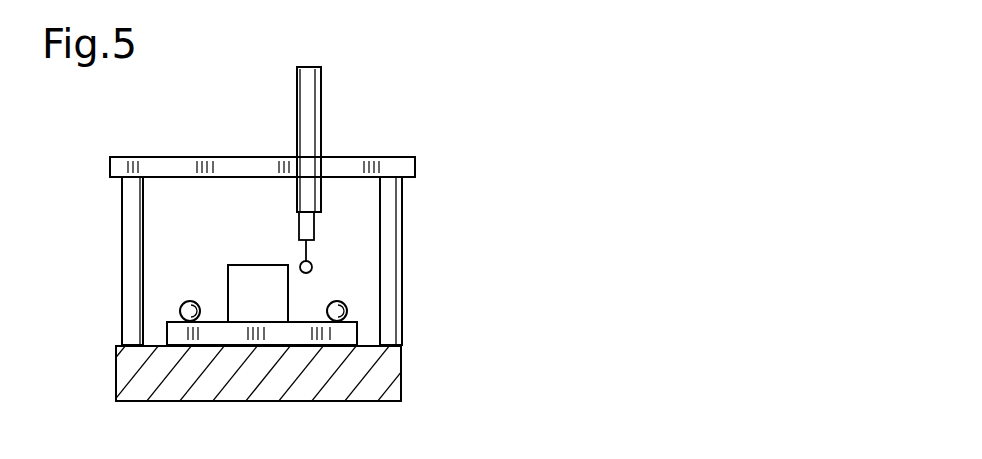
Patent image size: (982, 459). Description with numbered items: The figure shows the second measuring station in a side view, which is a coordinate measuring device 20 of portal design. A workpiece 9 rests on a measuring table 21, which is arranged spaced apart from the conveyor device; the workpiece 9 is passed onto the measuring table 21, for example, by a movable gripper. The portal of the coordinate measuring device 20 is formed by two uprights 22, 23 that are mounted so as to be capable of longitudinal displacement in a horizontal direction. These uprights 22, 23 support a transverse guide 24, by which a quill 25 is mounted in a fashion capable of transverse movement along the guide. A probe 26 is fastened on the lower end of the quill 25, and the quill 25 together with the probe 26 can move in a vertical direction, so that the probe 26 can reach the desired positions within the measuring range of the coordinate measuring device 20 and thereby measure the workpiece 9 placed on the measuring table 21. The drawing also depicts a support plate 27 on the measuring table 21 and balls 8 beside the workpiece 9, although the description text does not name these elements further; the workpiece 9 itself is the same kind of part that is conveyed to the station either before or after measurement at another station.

The coordinate measuring device 20 is at (452, 217).
The measuring table 21 is at (403, 371).
The upright 22 is at (402, 288).
The upright 23 is at (121, 293).
The transverse guide 24 is at (200, 157).
The quill 25 is at (321, 125).
The probe 26 is at (310, 263).
The support plate 27 is at (223, 337).
The positioning balls 8 is at (190, 301).
The workpiece 9 is at (272, 308).